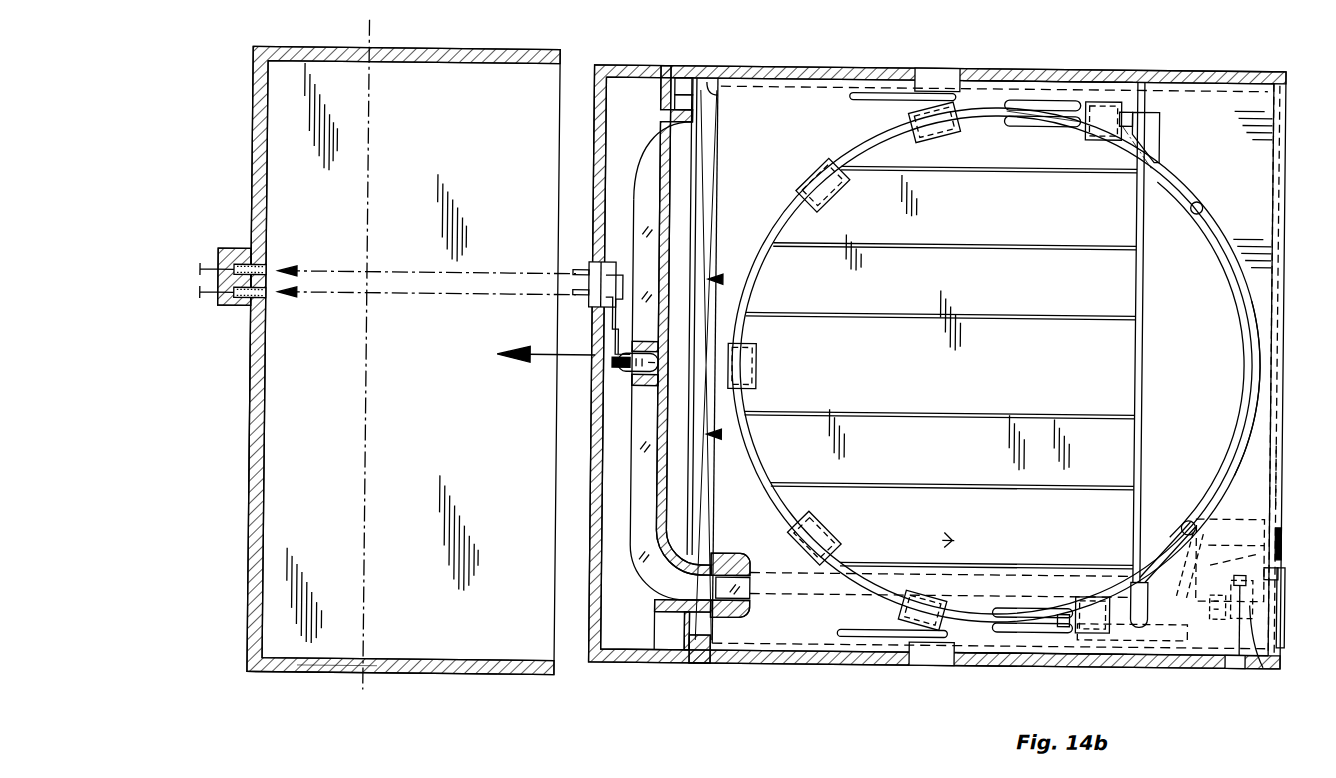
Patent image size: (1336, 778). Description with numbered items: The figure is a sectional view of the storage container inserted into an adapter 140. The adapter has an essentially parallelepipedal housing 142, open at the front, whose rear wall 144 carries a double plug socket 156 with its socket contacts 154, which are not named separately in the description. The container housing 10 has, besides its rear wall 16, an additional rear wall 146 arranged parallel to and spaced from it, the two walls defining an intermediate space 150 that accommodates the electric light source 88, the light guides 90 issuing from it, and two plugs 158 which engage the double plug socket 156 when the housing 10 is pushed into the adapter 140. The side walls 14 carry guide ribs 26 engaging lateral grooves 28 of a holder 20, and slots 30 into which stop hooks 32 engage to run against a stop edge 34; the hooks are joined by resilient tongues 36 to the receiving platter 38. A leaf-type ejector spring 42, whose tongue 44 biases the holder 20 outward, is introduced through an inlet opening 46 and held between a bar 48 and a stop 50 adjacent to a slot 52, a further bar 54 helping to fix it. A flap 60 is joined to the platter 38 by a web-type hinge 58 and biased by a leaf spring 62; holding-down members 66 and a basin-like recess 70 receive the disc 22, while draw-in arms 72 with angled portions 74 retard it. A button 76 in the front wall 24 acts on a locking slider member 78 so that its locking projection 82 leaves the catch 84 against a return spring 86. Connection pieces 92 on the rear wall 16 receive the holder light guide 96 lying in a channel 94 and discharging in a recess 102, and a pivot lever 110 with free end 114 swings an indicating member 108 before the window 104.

The housing 10 is at (698, 672).
The side wall 14 is at (815, 66).
The rear wall 16 is at (658, 248).
The holder 20 is at (1286, 258).
The recording medium 22 is at (1142, 148).
The front wall 24 is at (1280, 468).
The guide rib 26 is at (760, 92).
The lateral groove 28 is at (776, 663).
The slot 30 is at (1008, 66).
The stop hook 32 is at (932, 66).
The stop edge 34 is at (1090, 66).
The resilient tongue 36 is at (868, 98).
The receiving platter 38 is at (769, 162).
The ejector spring 42 is at (722, 279).
The tongue 44 is at (695, 150).
The inlet opening 46 is at (676, 103).
The bar 48 is at (708, 90).
The stop 50 is at (672, 88).
The slot 52 is at (668, 72).
The bar 54 is at (668, 118).
The web-type hinge 58 is at (1146, 372).
The flap 60 is at (1262, 456).
The leaf spring 62 is at (1165, 663).
The holding-down member 66 is at (940, 122).
The basin-like recess 70 is at (790, 212).
The draw-in arm 72 is at (1027, 123).
The angled portion 74 is at (1072, 123).
The button 76 is at (1288, 616).
The locking slider member 78 is at (1266, 664).
The locking projection 82 is at (1242, 663).
The catch 84 is at (1232, 666).
The return spring 86 is at (1172, 548).
The electric light source 88 is at (628, 372).
The light guide 90 is at (641, 202).
The connection piece 92 is at (730, 553).
The channel 94 is at (948, 538).
The light guide 96 is at (752, 588).
The recess 102 is at (752, 608).
The window 104 is at (1284, 534).
The indicating member 108 is at (1281, 570).
The pivot lever 110 is at (1250, 514).
The free end 114 is at (1190, 516).
The adapter 140 is at (335, 682).
The housing 142 is at (458, 672).
The rear wall 144 is at (250, 478).
The additional rear wall 146 is at (604, 126).
The intermediate space 150 is at (630, 645).
The connector pin 154 is at (225, 276).
The double plug socket 156 is at (240, 312).
The plug 158 is at (582, 266).